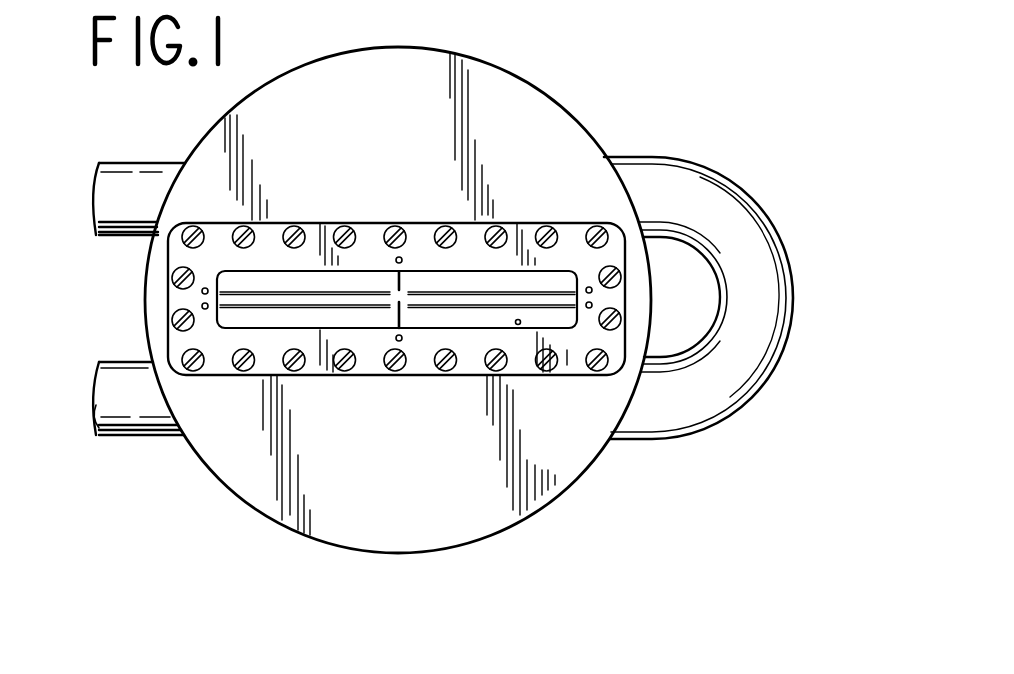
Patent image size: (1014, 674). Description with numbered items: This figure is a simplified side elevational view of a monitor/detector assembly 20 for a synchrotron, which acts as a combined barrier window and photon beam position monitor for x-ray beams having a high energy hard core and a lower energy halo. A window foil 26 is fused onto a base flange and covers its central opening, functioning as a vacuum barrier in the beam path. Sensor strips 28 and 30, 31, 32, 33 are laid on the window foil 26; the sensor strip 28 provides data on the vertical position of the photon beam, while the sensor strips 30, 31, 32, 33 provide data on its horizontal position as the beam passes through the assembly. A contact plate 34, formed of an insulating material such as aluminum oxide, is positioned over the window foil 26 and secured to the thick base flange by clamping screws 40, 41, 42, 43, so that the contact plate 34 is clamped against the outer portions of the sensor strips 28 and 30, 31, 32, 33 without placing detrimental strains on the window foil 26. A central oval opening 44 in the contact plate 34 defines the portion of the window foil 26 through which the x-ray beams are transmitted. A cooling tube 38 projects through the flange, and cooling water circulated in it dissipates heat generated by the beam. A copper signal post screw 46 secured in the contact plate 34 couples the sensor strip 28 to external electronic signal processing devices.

The monitor/detector assembly 20 is at (620, 488).
The window foil 26 is at (566, 268).
The sensor strip 28 is at (405, 286).
The sensor strip 30 is at (297, 292).
The sensor strip 31 is at (451, 291).
The sensor strip 32 is at (287, 305).
The sensor strip 33 is at (470, 308).
The contact plate 34 is at (213, 377).
The cooling tube 38 is at (720, 171).
The clamping screw 40 is at (404, 226).
The clamping screw 41 is at (171, 278).
The clamping screw 42 is at (171, 319).
The clamping screw 43 is at (400, 343).
The central oval opening 44 is at (519, 325).
The signal post screw 46 is at (397, 257).